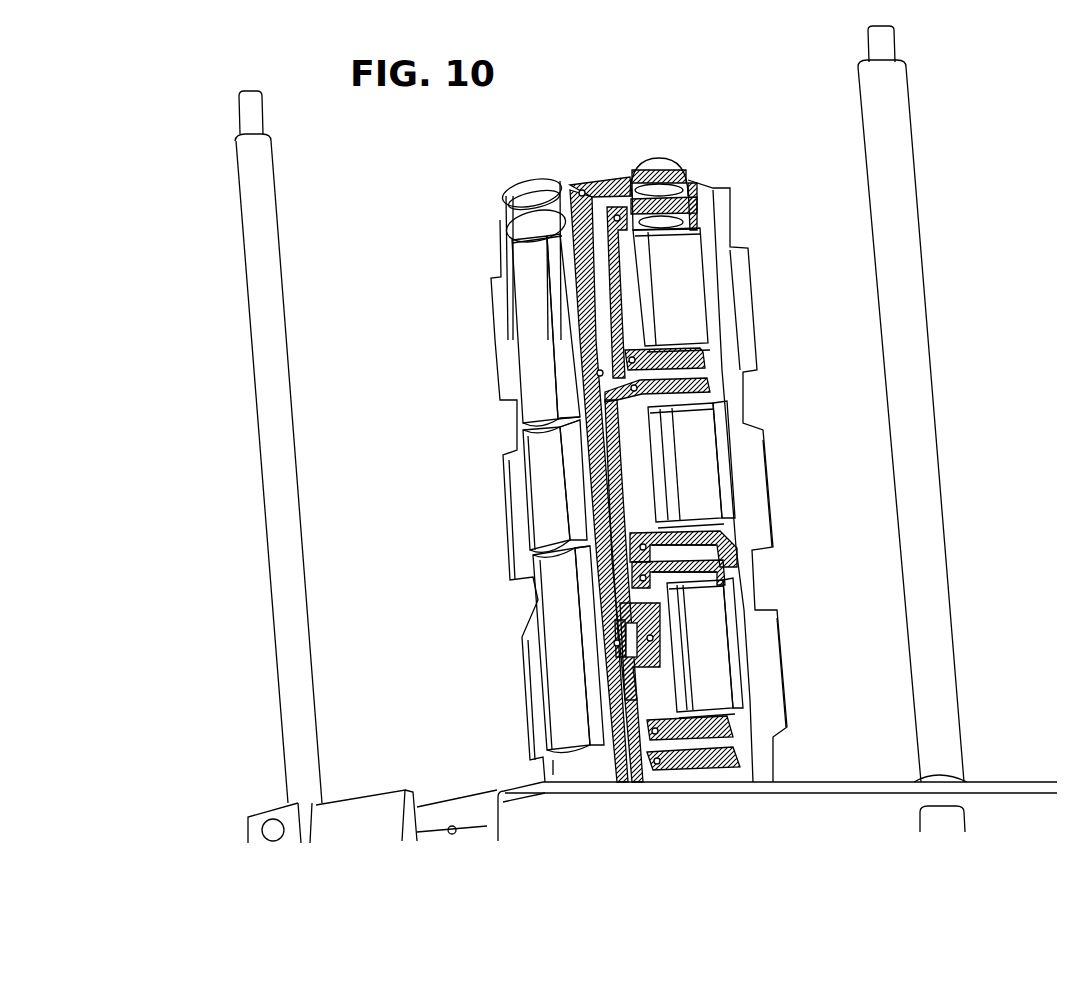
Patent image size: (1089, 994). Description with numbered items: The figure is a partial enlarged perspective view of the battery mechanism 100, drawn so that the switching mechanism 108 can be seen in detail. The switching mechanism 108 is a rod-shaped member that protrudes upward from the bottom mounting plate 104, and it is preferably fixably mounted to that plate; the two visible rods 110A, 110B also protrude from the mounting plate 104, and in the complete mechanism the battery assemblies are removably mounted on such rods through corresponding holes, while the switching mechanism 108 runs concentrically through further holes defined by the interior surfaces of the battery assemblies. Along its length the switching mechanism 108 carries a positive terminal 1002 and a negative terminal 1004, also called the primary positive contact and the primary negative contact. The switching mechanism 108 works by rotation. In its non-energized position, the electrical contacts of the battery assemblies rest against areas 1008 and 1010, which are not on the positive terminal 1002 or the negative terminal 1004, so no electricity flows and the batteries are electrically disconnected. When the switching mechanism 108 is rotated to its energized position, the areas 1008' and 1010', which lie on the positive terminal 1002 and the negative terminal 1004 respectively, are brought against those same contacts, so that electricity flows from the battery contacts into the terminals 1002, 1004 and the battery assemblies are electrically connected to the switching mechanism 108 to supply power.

The battery mechanism 100 is at (990, 164).
The mounting plate 104 is at (860, 788).
The switching mechanism 108 is at (713, 197).
The rod 110A is at (917, 352).
The rod 110B is at (276, 356).
The positive terminal 1002 is at (605, 175).
The negative terminal 1004 is at (623, 275).
The area 1008 is at (534, 224).
The area 1008' is at (663, 161).
The area 1010 is at (518, 493).
The area 1010' is at (727, 443).